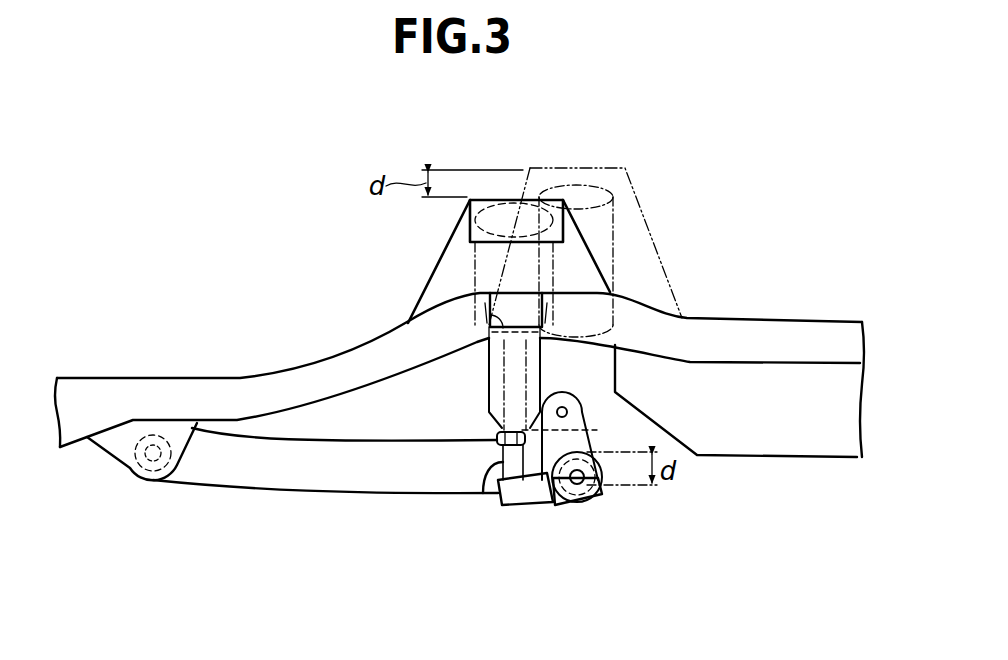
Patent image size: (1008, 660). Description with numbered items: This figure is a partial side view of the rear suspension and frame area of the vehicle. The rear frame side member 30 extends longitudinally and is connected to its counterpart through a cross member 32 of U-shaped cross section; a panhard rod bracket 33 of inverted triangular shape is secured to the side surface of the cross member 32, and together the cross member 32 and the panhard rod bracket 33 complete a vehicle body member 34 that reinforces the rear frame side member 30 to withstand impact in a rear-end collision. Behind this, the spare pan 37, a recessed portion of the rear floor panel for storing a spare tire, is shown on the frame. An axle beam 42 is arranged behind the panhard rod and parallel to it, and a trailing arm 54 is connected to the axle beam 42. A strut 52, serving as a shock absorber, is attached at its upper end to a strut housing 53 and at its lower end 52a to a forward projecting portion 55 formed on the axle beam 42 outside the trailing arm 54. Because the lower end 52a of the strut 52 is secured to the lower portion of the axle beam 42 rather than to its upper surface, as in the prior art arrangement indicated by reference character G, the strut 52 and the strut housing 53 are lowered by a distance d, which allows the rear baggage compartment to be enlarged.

The rear frame side member 30 is at (283, 361).
The cross member 32 is at (482, 310).
The panhard rod bracket 33 is at (490, 370).
The vehicle body member 34 is at (408, 306).
The spare pan 37 is at (757, 458).
The axle beam 42 is at (583, 508).
The strut 52 is at (473, 268).
The lower end of strut 52a is at (485, 466).
The strut housing 53 is at (507, 199).
The trailing arm 54 is at (352, 498).
The forward projecting portion 55 is at (532, 500).
The prior art arrangement G is at (664, 225).